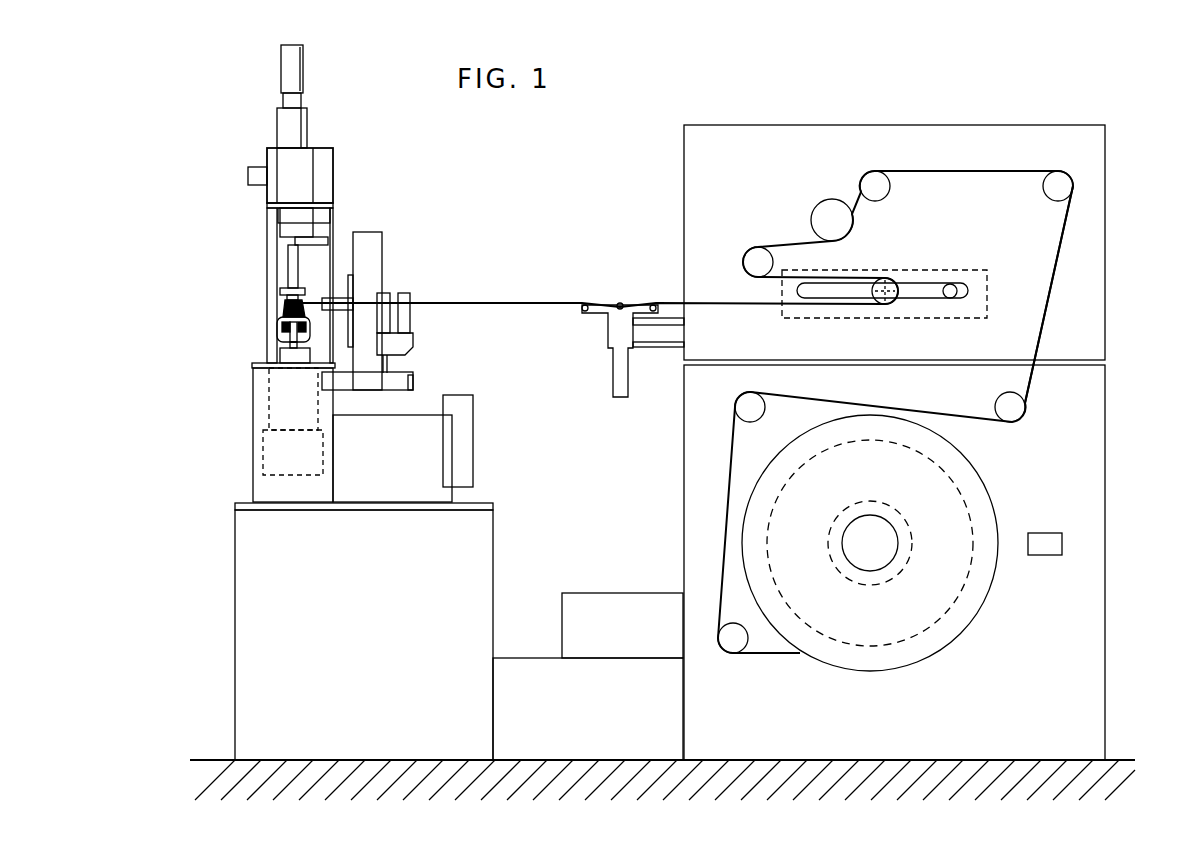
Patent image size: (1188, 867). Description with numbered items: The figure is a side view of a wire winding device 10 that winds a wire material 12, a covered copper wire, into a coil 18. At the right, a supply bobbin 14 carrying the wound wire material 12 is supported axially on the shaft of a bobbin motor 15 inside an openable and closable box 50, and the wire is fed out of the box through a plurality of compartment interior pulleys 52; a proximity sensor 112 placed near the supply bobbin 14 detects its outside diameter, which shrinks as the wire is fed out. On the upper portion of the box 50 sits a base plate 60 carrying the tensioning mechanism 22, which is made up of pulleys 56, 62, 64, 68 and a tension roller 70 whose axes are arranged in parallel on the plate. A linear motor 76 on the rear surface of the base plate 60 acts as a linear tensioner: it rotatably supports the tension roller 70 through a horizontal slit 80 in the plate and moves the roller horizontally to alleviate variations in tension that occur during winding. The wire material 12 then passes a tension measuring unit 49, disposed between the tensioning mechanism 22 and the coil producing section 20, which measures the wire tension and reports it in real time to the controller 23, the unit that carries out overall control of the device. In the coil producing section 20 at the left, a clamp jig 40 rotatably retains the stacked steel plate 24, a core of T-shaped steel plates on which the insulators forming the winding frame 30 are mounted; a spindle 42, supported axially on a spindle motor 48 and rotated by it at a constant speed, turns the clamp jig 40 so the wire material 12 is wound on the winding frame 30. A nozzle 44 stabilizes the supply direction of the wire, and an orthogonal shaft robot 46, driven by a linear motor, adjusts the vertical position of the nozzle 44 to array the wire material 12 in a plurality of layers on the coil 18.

The wire winding device 10 is at (572, 137).
The wire material 12 is at (521, 302).
The supply bobbin 14 is at (855, 665).
The bobbin motor 15 is at (915, 525).
The coil 18 is at (350, 298).
The coil producing section 20 is at (254, 124).
The tensioning mechanism 22 is at (1033, 138).
The controller 23 is at (628, 607).
The stacked steel plate 24 is at (284, 298).
The winding frame 30 is at (276, 308).
The clamp jig 40 is at (288, 264).
The spindle 42 is at (285, 406).
The nozzle 44 is at (348, 310).
The orthogonal shaft robot 46 is at (382, 244).
The spindle motor 48 is at (285, 456).
The tension measuring unit 49 is at (608, 330).
The box 50 is at (1085, 468).
The compartment interior pulleys 52 is at (745, 407).
The pulley 56 is at (1050, 186).
The base plate 60 is at (1085, 250).
The pulley 62 is at (880, 186).
The pulley 64 is at (826, 222).
The pulley 68 is at (755, 262).
The tension roller 70 is at (886, 285).
The linear motor 76 is at (983, 270).
The slit 80 is at (949, 288).
The proximity sensor 112 is at (1040, 532).